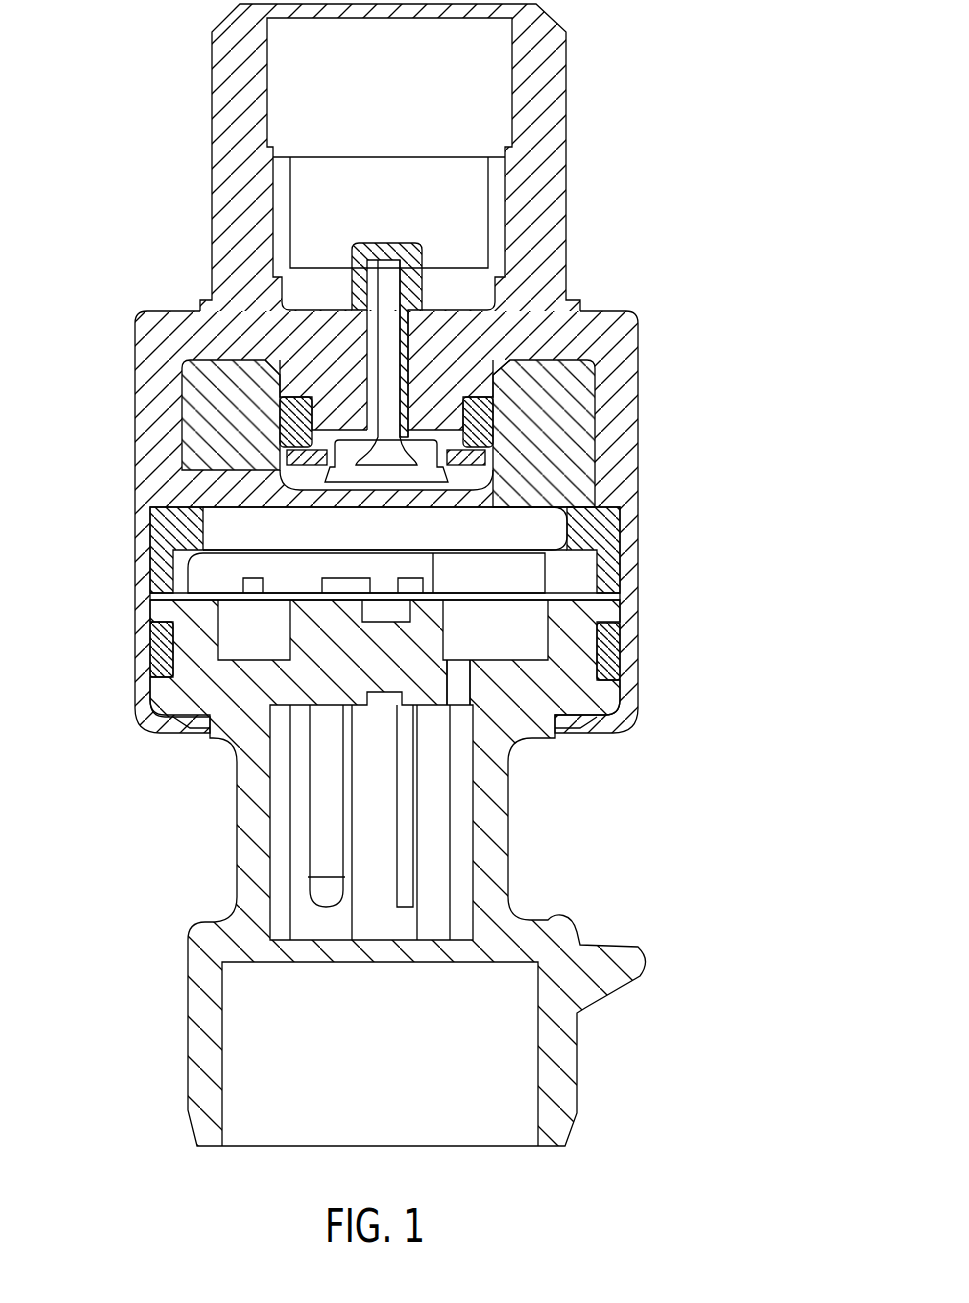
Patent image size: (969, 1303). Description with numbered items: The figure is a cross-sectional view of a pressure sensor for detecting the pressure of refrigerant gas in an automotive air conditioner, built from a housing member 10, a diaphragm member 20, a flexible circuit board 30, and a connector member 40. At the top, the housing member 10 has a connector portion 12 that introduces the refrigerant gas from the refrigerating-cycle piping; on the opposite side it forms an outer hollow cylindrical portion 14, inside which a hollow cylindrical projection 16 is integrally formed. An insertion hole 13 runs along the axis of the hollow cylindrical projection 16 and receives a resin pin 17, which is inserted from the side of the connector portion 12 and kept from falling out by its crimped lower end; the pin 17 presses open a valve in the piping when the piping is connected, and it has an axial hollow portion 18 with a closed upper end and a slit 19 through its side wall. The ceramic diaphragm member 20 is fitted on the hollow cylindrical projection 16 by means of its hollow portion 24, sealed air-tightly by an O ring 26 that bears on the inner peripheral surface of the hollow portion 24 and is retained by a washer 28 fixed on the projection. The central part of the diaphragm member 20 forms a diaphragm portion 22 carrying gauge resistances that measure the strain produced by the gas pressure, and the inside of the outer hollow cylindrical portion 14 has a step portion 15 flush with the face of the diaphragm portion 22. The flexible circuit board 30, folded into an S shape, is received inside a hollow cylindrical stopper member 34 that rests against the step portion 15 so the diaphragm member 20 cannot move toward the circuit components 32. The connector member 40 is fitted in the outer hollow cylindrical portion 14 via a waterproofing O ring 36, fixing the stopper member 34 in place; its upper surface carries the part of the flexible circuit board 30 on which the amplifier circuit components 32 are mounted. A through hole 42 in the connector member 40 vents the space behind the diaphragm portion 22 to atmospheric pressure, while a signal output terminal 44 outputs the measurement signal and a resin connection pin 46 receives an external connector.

The housing member 10 is at (568, 146).
The connector portion 12 is at (473, 62).
The insertion hole 13 is at (390, 340).
The outer hollow cylindrical portion 14 is at (643, 357).
The step portion 15 is at (643, 523).
The hollow cylindrical projection 16 is at (497, 378).
The pin 17 is at (423, 257).
The hollow portion 18 is at (393, 283).
The slit 19 is at (368, 293).
The diaphragm member 20 is at (215, 432).
The diaphragm portion 22 is at (377, 508).
The hollow portion 24 is at (370, 474).
The O ring 26 is at (495, 425).
The washer 28 is at (495, 458).
The flexible circuit board 30 is at (190, 582).
The circuit components 32 is at (520, 580).
The stopper member 34 is at (608, 557).
The waterproofing O ring 36 is at (610, 653).
The connector member 40 is at (508, 877).
The through hole 42 is at (460, 688).
The signal output terminal 44 is at (413, 850).
The resin connection pin 46 is at (313, 820).